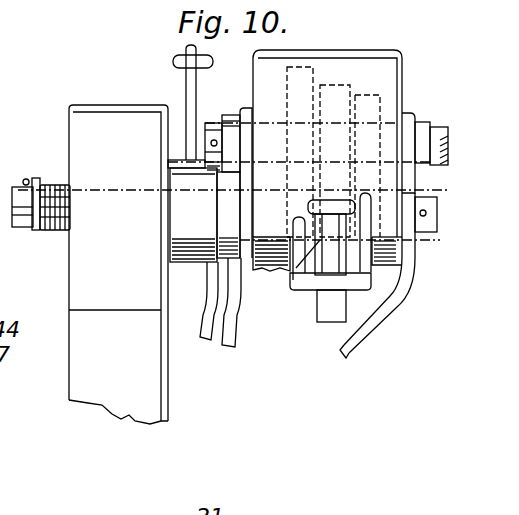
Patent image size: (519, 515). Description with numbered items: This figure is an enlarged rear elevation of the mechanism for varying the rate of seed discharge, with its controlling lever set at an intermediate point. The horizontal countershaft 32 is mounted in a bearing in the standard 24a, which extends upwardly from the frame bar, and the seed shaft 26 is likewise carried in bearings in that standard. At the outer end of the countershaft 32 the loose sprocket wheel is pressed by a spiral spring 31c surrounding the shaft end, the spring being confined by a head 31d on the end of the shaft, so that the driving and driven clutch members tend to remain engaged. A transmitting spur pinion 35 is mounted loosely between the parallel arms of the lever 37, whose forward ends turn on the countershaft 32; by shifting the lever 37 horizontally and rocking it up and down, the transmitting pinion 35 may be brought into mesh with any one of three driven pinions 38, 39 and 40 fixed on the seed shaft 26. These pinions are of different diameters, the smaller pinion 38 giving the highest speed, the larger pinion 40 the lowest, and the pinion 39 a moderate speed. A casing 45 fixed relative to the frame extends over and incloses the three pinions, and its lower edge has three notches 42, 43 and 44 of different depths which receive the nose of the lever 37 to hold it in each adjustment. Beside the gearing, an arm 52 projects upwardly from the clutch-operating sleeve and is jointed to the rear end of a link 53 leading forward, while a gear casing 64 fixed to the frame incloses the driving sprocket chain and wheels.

The standard 24a is at (216, 342).
The seed shaft 26 is at (437, 137).
The spiral spring 31c is at (51, 232).
The head 31d is at (37, 177).
The countershaft 32 is at (28, 219).
The transmitting spur pinion 35 is at (332, 310).
The lever 37 is at (333, 268).
The driven pinion 38 is at (370, 112).
The driven pinion 39 is at (356, 84).
The driven pinion 40 is at (366, 44).
The notch 42 is at (296, 216).
The notch 43 is at (332, 222).
The notch 44 is at (368, 220).
The casing 45 is at (256, 92).
The arm 52 is at (186, 90).
The link 53 is at (175, 60).
The gear casing 64 is at (118, 264).